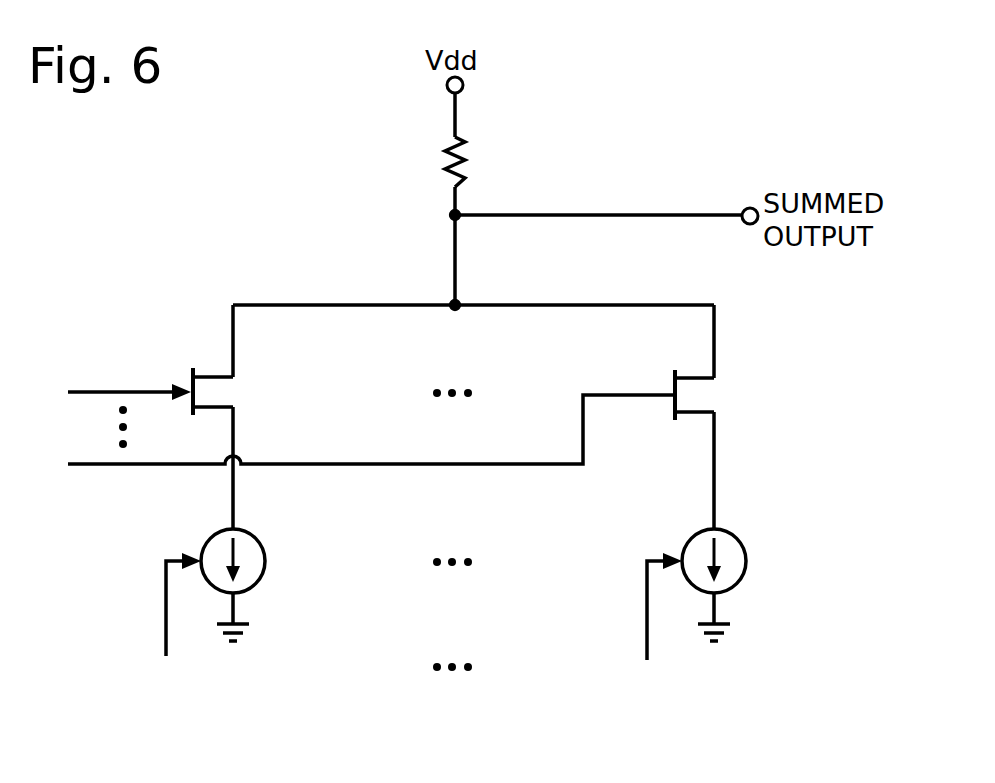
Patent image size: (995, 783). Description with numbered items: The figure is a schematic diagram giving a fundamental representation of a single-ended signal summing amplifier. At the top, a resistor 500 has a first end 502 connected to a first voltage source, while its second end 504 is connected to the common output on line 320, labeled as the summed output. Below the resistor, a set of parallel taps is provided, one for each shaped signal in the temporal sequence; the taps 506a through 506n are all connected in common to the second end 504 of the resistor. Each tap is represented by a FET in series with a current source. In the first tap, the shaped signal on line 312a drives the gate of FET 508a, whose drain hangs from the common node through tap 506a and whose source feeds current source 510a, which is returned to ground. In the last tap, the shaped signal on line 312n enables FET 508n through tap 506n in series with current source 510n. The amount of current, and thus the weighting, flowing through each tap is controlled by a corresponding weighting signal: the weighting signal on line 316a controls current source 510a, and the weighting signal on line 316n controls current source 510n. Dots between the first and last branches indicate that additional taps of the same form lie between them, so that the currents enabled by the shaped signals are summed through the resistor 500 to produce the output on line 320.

The common output line 320 is at (648, 214).
The resistor 500 is at (452, 163).
The first end of resistor 502 is at (468, 137).
The second end of resistor 504 is at (436, 185).
The tap 506a is at (250, 291).
The tap 506n is at (722, 315).
The FET 508a is at (250, 393).
The FET 508n is at (720, 398).
The shaped signal line 312a is at (125, 388).
The shaped signal line 312n is at (130, 467).
The current source 510a is at (300, 532).
The current source 510n is at (781, 532).
The weighting signal line 316a is at (164, 610).
The weighting signal line 316n is at (645, 612).